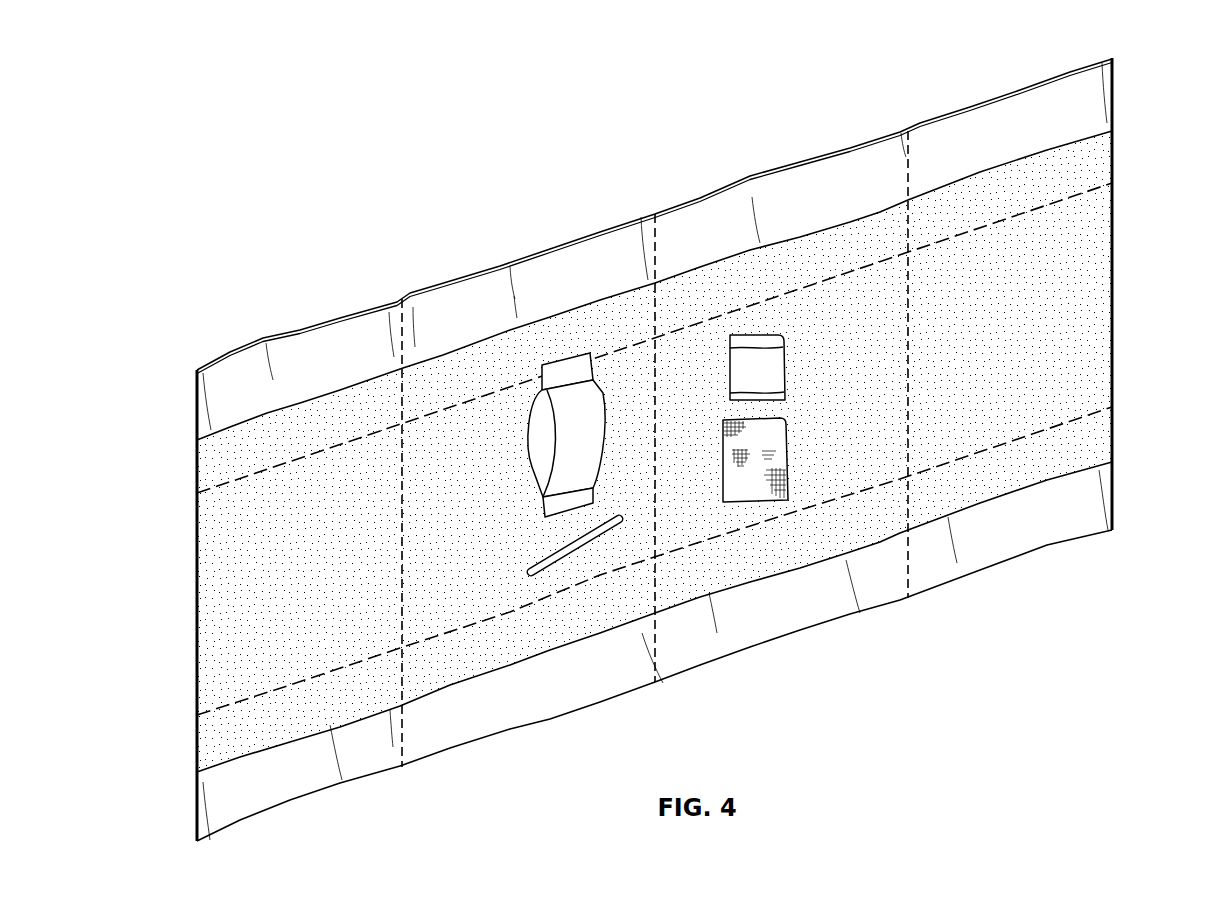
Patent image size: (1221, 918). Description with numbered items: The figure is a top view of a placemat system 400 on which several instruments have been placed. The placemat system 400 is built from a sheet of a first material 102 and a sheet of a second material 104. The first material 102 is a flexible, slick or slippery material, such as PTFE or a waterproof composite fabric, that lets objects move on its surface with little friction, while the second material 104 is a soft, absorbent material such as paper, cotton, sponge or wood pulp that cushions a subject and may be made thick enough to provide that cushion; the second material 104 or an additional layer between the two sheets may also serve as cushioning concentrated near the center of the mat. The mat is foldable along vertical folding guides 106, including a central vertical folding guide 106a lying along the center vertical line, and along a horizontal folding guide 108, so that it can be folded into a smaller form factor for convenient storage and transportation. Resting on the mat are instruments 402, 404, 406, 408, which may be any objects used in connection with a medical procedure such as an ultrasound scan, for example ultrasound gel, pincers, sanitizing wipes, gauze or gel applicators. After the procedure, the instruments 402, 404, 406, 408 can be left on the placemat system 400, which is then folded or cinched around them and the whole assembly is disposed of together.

The placemat system 400 is at (595, 131).
The first material 102 is at (977, 128).
The second material 104 is at (1083, 300).
The vertical folding guide 106 is at (402, 396).
The central vertical folding guide 106a is at (655, 310).
The horizontal folding guide 108 is at (848, 270).
The instrument 402 is at (576, 410).
The instrument 404 is at (748, 335).
The instrument 406 is at (757, 502).
The instrument 408 is at (575, 545).